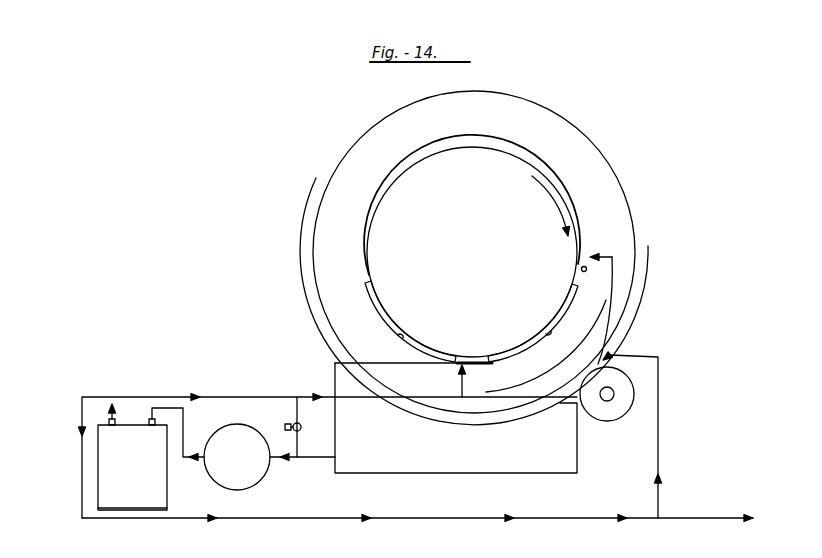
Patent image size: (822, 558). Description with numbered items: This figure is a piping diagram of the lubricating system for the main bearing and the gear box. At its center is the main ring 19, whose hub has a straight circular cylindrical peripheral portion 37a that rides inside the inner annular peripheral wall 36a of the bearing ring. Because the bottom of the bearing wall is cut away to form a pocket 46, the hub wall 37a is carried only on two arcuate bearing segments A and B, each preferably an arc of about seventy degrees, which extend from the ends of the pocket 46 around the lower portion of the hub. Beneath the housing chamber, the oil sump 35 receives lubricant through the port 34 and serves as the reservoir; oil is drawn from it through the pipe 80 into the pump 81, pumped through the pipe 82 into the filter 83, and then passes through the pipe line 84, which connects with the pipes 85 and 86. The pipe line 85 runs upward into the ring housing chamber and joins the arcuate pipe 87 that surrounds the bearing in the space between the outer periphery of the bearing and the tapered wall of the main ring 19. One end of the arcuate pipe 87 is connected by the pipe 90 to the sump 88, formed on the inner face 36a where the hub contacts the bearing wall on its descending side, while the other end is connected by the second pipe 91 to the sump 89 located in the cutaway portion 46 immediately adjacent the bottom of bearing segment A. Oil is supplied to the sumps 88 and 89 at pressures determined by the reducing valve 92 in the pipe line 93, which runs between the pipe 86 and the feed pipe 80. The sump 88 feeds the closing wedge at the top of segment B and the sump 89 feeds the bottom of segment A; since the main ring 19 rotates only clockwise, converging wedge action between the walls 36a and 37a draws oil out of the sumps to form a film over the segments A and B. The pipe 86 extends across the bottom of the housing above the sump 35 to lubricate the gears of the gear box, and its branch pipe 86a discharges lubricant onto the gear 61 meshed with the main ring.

The main ring 19 is at (572, 145).
The inner annular peripheral wall 36a is at (519, 144).
The straight circular cylindrical peripheral portion 37a is at (483, 152).
The sump 88 is at (582, 270).
The pipe 90 is at (604, 256).
The pocket 46 is at (487, 361).
The sump 89 is at (459, 362).
The second pipe 91 is at (467, 384).
The arcuate pipe 87 is at (600, 321).
The port 34 is at (475, 432).
The oil sump 35 is at (462, 474).
The gear 61 is at (613, 410).
The branch pipe 86a is at (657, 446).
The pipe 86 is at (185, 519).
The pipe line 85 is at (157, 397).
The pipe line 84 is at (115, 419).
The filter 83 is at (153, 490).
The pipe 82 is at (187, 425).
The pump 81 is at (253, 473).
The pipe 80 is at (317, 458).
The reducing valve 92 is at (302, 430).
The pipe line 93 is at (293, 447).
The bearing segment A is at (388, 357).
The bearing segment B is at (564, 348).